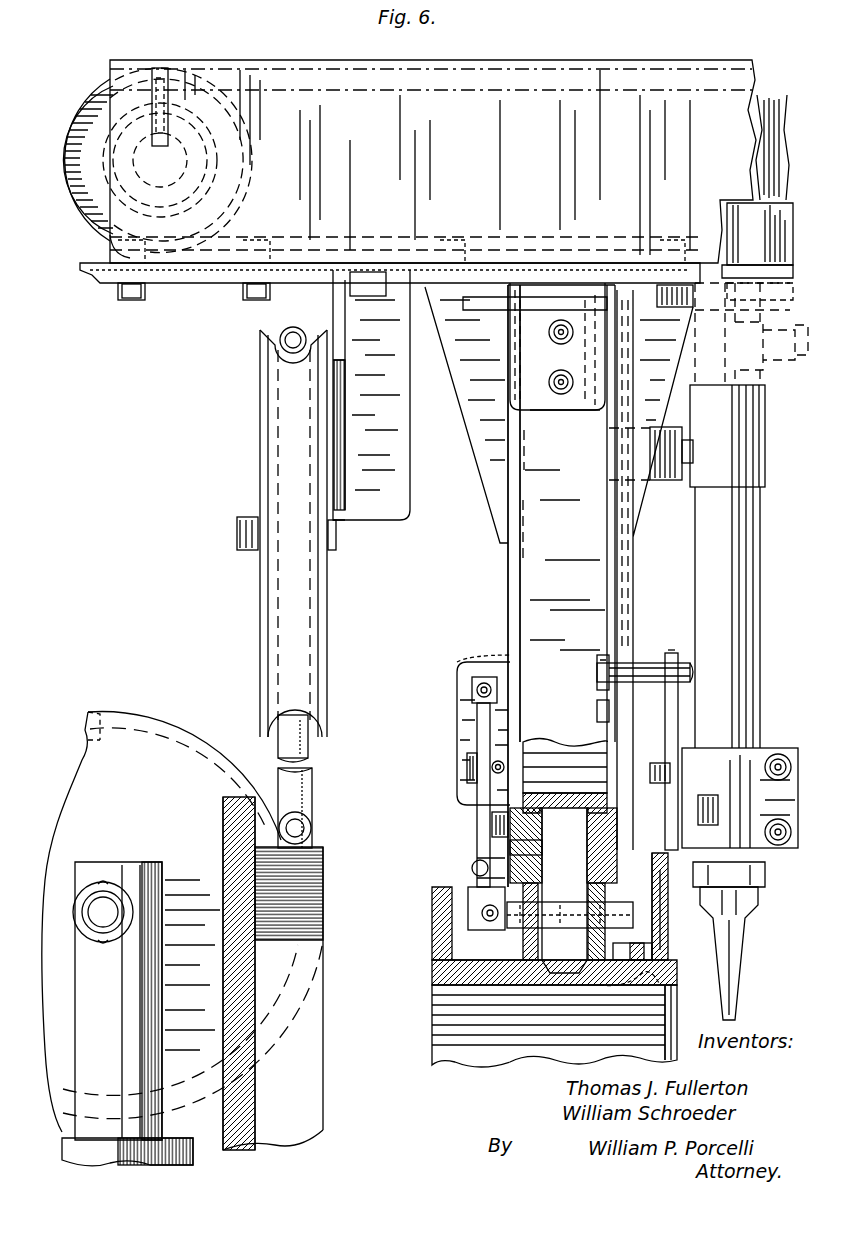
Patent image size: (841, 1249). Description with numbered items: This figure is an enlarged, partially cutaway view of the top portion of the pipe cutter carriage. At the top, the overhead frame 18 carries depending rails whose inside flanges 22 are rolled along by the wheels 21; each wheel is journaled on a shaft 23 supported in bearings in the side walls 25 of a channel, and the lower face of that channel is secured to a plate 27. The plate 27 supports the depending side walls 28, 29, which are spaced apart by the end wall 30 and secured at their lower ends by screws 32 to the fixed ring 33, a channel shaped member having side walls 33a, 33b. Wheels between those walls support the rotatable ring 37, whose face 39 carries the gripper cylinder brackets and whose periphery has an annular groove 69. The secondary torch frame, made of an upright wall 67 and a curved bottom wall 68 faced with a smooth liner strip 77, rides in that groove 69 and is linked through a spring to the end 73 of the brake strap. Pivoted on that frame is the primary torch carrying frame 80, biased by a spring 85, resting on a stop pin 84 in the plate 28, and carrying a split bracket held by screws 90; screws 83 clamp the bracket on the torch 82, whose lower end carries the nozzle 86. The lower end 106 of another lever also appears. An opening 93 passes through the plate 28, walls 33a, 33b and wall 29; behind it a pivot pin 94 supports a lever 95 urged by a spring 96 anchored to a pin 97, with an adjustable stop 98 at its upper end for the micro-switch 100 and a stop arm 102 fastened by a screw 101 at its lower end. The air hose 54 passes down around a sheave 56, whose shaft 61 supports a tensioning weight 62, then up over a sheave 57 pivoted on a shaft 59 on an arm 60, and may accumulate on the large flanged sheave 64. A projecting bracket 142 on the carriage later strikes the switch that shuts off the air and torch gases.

The overhead frame 18 is at (590, 46).
The wheel 21 is at (100, 112).
The shaft 23 is at (175, 165).
The side wall 25 is at (800, 72).
The inside flange 22 is at (765, 235).
The plate 27 is at (468, 272).
The arm 60 is at (385, 438).
The sheave 57 is at (318, 633).
The shaft 59 is at (237, 528).
The end wall 30 is at (575, 540).
The side wall 29 is at (512, 565).
The projecting bracket 142 is at (552, 358).
The stop pin 84 is at (645, 665).
The side wall 28 is at (625, 580).
The torch 82 is at (742, 606).
The lower end of lever 106 is at (745, 594).
The screw 83 is at (778, 766).
The primary torch carrying frame 80 is at (673, 752).
The spring 85 is at (672, 762).
The screw 90 is at (718, 810).
The fixed ring 33 is at (578, 782).
The side wall of fixed ring 33a is at (525, 855).
The side wall of fixed ring 33b is at (590, 872).
The screw 32 is at (498, 820).
The opening 93 is at (583, 897).
The screw 101 is at (492, 930).
The lever 95 is at (475, 717).
The micro-switch 100 is at (455, 665).
The adjustable stop 98 is at (484, 683).
The pivot pin 94 is at (468, 770).
The pin 97 is at (478, 858).
The spring 96 is at (472, 869).
The face of rotatable ring 39 is at (435, 918).
The rotatable ring 37 is at (435, 968).
The stop arm 102 is at (565, 935).
The bottom wall 68 is at (635, 950).
The liner strip 77 is at (650, 958).
The upright wall 67 is at (662, 924).
The annular groove 69 is at (625, 978).
The end of brake strap 73 is at (672, 1004).
The nozzle 86 is at (735, 940).
The sheave 56 is at (128, 722).
The shaft 61 is at (108, 900).
The weight 62 is at (143, 1158).
The flanged sheave 64 is at (312, 1032).
The air hose 54 is at (312, 772).